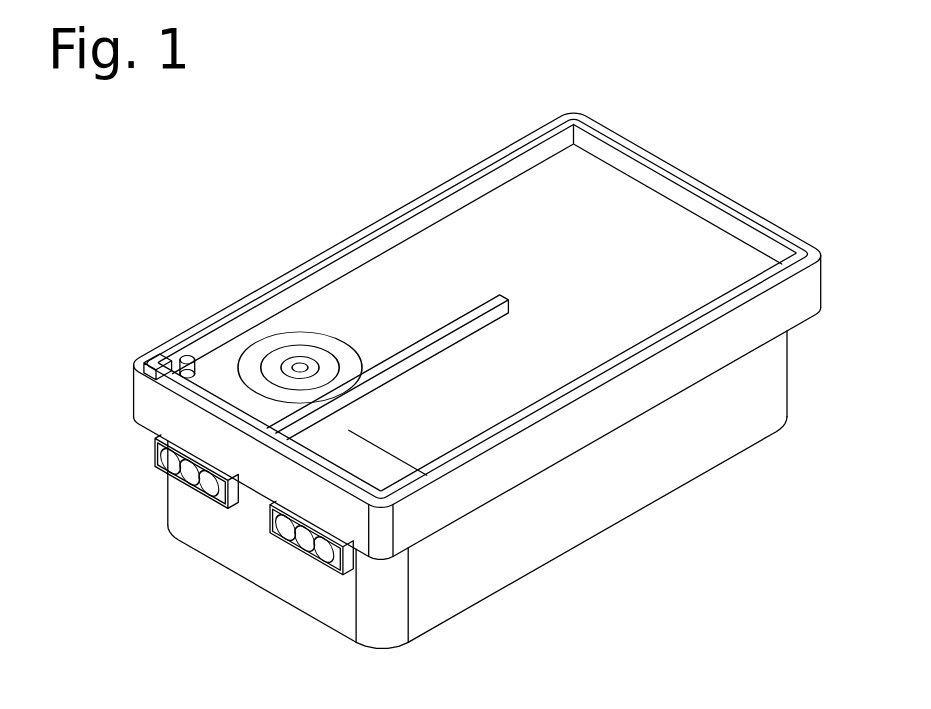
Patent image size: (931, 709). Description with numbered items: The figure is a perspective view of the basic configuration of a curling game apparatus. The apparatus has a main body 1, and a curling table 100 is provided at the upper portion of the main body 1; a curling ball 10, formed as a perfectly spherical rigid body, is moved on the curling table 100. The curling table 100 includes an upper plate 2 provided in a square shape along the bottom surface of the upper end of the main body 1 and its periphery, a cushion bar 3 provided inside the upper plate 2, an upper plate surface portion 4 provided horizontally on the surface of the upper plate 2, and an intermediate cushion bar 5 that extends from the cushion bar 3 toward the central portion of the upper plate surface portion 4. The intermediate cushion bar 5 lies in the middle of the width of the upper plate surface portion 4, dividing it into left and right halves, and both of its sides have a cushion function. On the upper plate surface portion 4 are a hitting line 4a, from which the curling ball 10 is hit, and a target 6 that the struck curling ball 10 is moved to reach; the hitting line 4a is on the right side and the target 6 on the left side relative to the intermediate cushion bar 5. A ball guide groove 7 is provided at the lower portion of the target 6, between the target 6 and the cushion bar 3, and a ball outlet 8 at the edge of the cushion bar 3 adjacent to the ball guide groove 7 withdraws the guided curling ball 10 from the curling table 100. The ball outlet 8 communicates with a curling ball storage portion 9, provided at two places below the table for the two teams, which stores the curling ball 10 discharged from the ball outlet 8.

The curling table 100 is at (466, 142).
The main body 1 is at (493, 567).
The upper plate 2 is at (766, 212).
The cushion bar 3 is at (398, 215).
The upper plate surface portion 4 is at (657, 208).
The hitting line 4a is at (387, 447).
The intermediate cushion bar 5 is at (500, 300).
The target 6 is at (300, 367).
The ball guide groove 7 is at (190, 368).
The ball outlet 8 is at (150, 364).
The curling ball storage portion 9 is at (152, 455).
The curling ball 10 is at (178, 470).